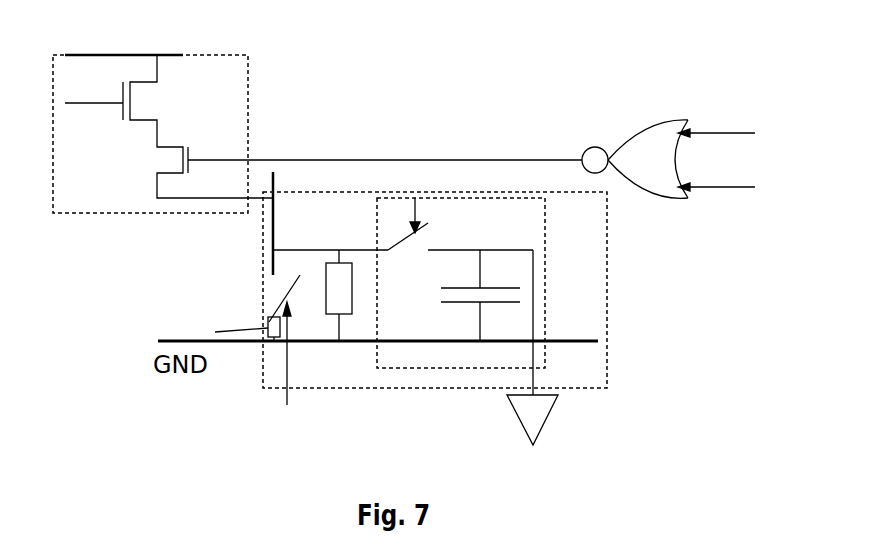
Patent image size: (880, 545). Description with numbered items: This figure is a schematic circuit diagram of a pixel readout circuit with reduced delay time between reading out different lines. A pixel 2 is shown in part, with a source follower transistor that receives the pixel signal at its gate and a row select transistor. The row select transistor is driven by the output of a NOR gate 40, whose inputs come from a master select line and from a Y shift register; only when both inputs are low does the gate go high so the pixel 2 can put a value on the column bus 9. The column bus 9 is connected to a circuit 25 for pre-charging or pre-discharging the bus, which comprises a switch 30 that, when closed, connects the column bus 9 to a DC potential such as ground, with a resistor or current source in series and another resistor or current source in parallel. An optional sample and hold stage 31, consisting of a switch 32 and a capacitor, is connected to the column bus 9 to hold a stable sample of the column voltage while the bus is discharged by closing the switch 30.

The pixel 2 is at (247, 122).
The column bus 9 is at (273, 187).
The circuit for pre-charging or pre-discharging the bus 25 is at (607, 340).
The switch 30 is at (295, 292).
The sample and hold stage 31 is at (545, 242).
The switch 32 is at (408, 241).
The NOR gate 40 is at (645, 152).